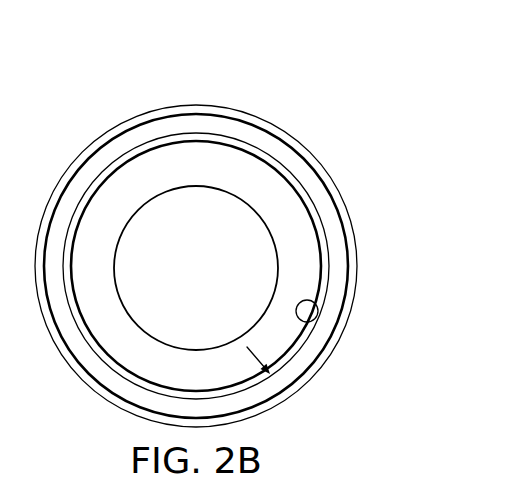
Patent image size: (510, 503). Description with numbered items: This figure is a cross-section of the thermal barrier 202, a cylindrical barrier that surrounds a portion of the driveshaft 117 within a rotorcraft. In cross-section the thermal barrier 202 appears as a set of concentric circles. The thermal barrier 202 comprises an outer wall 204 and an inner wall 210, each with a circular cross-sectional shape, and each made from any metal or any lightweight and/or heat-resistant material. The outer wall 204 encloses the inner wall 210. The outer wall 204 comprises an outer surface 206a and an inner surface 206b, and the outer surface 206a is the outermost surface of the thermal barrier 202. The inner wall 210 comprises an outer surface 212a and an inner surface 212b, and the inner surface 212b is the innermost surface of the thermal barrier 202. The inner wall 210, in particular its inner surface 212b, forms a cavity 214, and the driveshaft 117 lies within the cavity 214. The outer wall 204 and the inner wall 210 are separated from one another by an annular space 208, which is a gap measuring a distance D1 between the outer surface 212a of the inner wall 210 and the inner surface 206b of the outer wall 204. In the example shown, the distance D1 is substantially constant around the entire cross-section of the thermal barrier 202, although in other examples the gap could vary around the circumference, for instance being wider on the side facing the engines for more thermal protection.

The thermal barrier 202 is at (90, 81).
The outer wall 204 is at (222, 93).
The driveshaft 117 is at (185, 205).
The outer surface 206a is at (285, 100).
The inner surface 206b is at (288, 149).
The annular space 208 is at (325, 205).
The inner wall 210 is at (345, 247).
The outer surface 212a is at (334, 277).
The inner surface 212b is at (280, 336).
The cavity 214 is at (302, 352).
The distance D1 is at (286, 400).